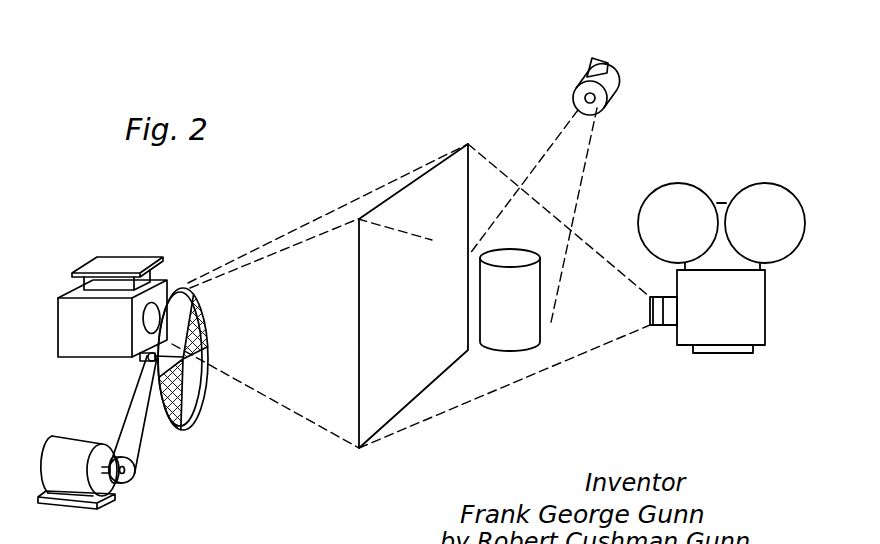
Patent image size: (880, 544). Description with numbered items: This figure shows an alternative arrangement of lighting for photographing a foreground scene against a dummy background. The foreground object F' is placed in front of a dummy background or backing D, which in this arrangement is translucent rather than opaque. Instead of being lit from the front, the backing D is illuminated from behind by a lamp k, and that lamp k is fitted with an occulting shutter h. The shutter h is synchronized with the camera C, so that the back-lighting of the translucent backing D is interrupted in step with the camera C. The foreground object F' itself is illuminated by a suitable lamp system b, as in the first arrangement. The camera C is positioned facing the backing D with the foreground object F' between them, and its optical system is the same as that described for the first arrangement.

The lamp k is at (165, 283).
The occulting shutter h is at (164, 426).
The dummy background or backing D is at (413, 296).
The foreground object F' is at (510, 300).
The lamp system b is at (613, 78).
The camera C is at (720, 190).